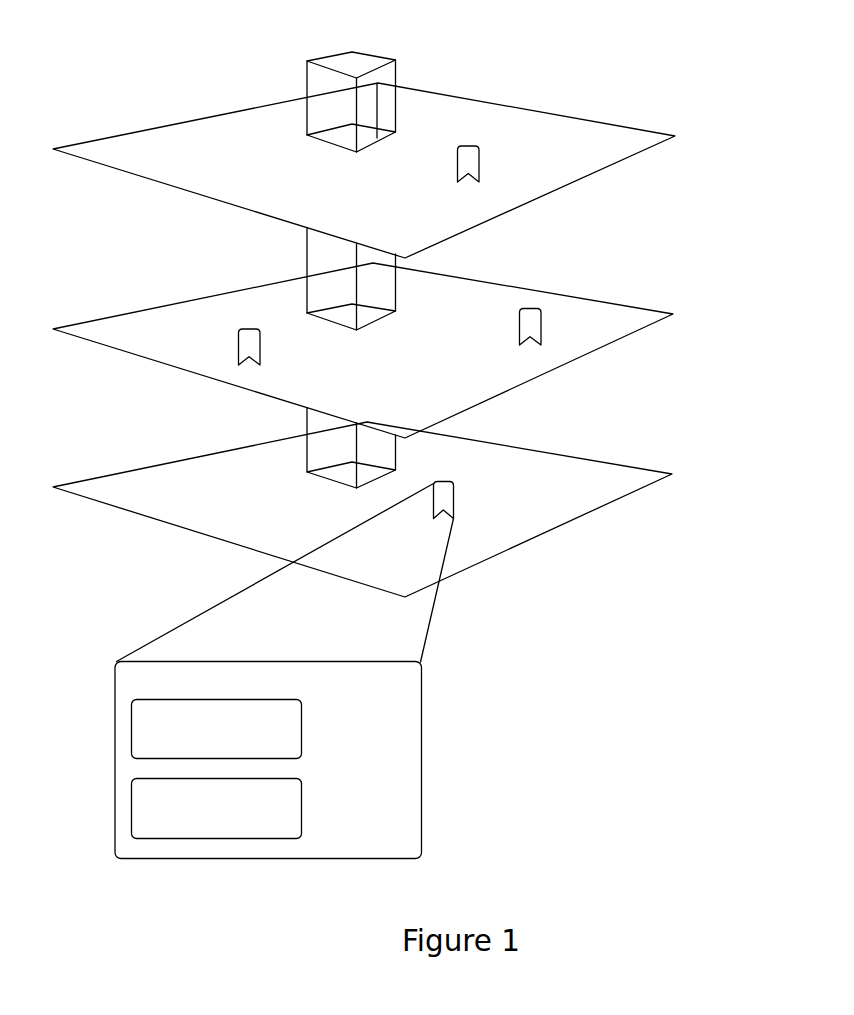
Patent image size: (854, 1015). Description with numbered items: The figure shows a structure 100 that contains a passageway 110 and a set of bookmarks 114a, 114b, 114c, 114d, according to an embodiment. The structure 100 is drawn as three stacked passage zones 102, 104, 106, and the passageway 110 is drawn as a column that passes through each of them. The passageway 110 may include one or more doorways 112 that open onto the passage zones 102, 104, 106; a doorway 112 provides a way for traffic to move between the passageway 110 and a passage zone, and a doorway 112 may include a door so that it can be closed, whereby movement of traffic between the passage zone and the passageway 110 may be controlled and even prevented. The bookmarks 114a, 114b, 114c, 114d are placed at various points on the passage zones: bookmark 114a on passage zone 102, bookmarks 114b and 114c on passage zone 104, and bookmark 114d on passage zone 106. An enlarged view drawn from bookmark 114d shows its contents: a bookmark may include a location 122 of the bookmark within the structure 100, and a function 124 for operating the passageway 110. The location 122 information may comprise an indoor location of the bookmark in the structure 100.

The structure 100 is at (590, 558).
The passage zone 102 is at (675, 136).
The passage zone 104 is at (673, 314).
The passage zone 106 is at (672, 474).
The passageway 110 is at (372, 52).
The doorway 112 is at (408, 113).
The bookmark 114a is at (479, 162).
The bookmark 114b is at (520, 345).
The bookmark 114c is at (260, 361).
The bookmark 114d is at (454, 493).
The location 122 is at (302, 751).
The function 124 is at (302, 831).